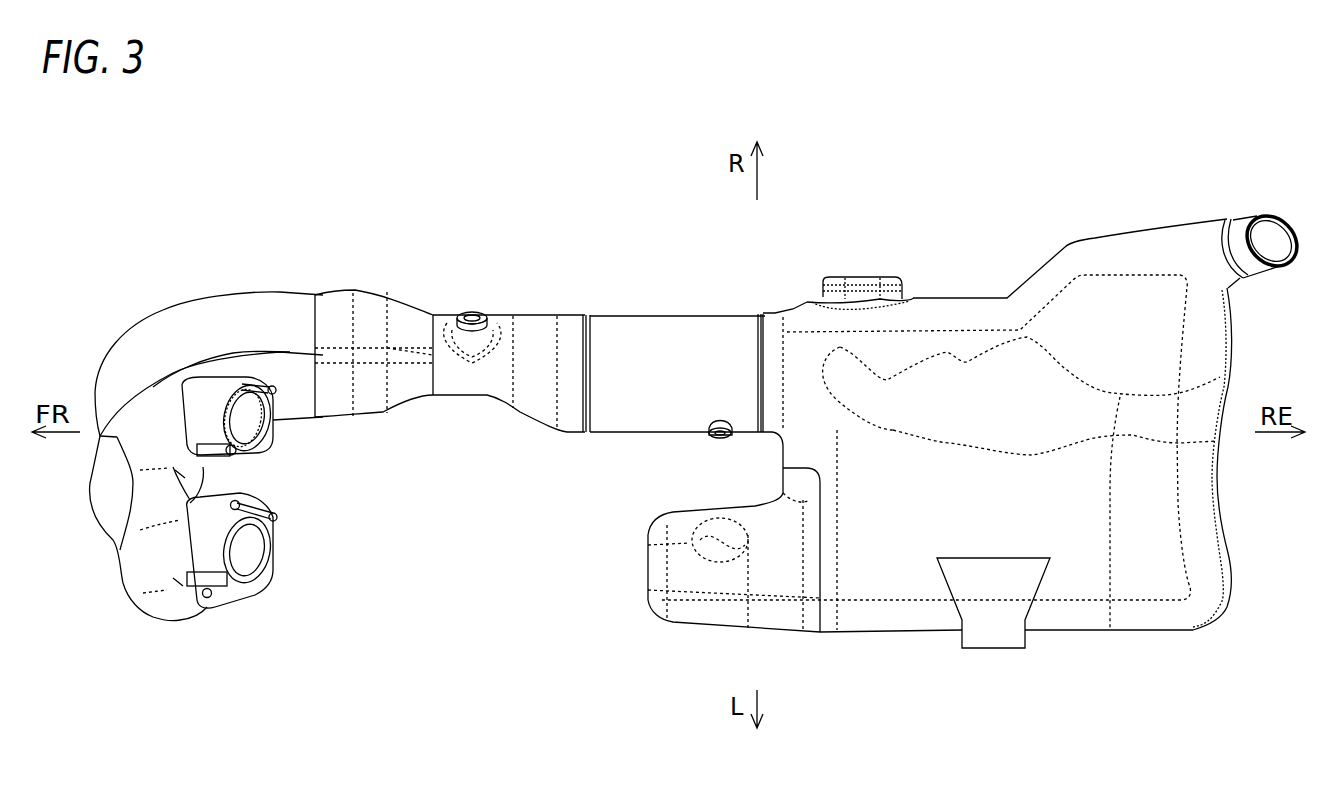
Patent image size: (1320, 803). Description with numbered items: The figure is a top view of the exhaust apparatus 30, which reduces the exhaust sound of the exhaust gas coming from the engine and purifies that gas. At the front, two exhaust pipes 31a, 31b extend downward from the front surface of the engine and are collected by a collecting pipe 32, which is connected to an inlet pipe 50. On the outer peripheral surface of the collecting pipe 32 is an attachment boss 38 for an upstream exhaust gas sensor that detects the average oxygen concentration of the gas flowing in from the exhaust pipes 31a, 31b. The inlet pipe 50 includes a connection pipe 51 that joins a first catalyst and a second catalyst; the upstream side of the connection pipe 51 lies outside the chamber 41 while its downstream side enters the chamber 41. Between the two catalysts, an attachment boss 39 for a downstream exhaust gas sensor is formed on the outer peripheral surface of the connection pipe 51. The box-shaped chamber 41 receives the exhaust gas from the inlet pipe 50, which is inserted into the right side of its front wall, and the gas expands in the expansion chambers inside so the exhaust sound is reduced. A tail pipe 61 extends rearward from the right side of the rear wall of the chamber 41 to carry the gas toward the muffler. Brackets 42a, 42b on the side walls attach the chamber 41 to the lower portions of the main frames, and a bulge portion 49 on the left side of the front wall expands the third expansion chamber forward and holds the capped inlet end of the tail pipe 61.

The exhaust apparatus 30 is at (303, 208).
The exhaust pipe 31a is at (180, 623).
The exhaust pipe 31b is at (152, 328).
The collecting pipe 32 is at (527, 312).
The attachment boss 38 is at (480, 310).
The attachment boss 39 is at (712, 435).
The chamber 41 is at (965, 315).
The bracket 42a is at (980, 650).
The bracket 42b is at (857, 273).
The bulge portion 49 is at (673, 623).
The inlet pipe 50 is at (620, 306).
The connection pipe 51 is at (662, 328).
The tail pipe 61 is at (1260, 215).